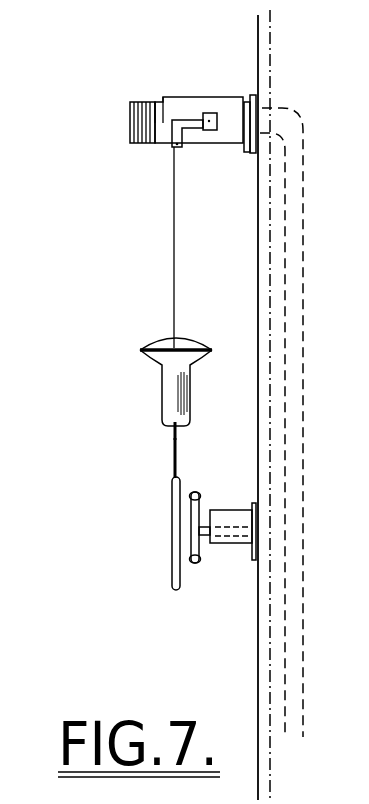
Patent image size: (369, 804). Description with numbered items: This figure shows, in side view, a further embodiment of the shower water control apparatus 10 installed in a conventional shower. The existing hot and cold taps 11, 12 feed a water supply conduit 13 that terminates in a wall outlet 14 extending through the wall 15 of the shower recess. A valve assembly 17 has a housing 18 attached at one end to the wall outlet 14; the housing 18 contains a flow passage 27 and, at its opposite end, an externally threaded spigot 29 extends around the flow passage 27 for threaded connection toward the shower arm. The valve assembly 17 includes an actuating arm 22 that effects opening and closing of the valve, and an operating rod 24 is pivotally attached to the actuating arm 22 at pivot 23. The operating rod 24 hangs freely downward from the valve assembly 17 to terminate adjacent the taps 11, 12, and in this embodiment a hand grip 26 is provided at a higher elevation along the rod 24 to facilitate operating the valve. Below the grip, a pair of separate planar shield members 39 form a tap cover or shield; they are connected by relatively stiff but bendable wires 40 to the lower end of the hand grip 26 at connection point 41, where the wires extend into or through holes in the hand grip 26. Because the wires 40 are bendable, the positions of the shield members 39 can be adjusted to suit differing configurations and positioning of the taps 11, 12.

The shower water control apparatus 10 is at (161, 148).
The hot tap 11 is at (211, 573).
The cold tap 12 is at (211, 560).
The water supply conduit 13 is at (305, 321).
The wall outlet 14 is at (252, 96).
The wall 15 is at (275, 80).
The valve assembly 17 is at (228, 115).
The housing 18 is at (196, 152).
The actuating arm 22 is at (184, 116).
The pivot 23 is at (168, 152).
The operating rod 24 is at (171, 292).
The hand grip 26 is at (175, 390).
The flow passage 27 is at (138, 347).
The externally threaded spigot 29 is at (143, 98).
The planar shield member 39 is at (170, 538).
The bendable wire 40 is at (170, 453).
The wire connection point 41 is at (165, 421).